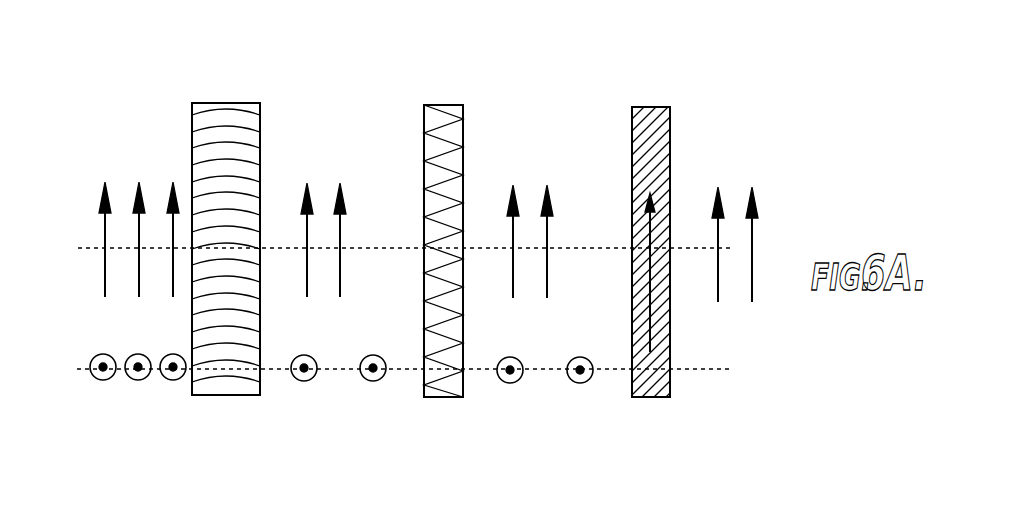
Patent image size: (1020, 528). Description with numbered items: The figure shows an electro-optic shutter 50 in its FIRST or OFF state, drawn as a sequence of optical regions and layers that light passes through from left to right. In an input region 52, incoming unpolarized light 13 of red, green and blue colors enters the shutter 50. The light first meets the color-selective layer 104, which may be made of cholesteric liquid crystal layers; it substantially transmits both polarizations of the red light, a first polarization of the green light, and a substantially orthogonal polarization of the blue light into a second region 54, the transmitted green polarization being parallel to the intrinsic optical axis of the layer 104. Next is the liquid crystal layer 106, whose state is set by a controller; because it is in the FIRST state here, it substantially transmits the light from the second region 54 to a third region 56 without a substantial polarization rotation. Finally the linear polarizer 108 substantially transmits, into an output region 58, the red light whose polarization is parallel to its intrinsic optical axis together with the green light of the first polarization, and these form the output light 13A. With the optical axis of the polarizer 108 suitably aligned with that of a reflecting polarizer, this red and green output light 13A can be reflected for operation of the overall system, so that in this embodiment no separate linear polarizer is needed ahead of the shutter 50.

The incoming unpolarized light 13 is at (118, 112).
The output light 13A is at (755, 136).
The electro-optic shutter 50 is at (378, 87).
The input region 52 is at (127, 433).
The second region 54 is at (326, 435).
The third region 56 is at (534, 437).
The output region 58 is at (734, 440).
The color-selective layer 104 is at (222, 102).
The liquid crystal layer 106 is at (463, 138).
The linear polarizer 108 is at (671, 122).